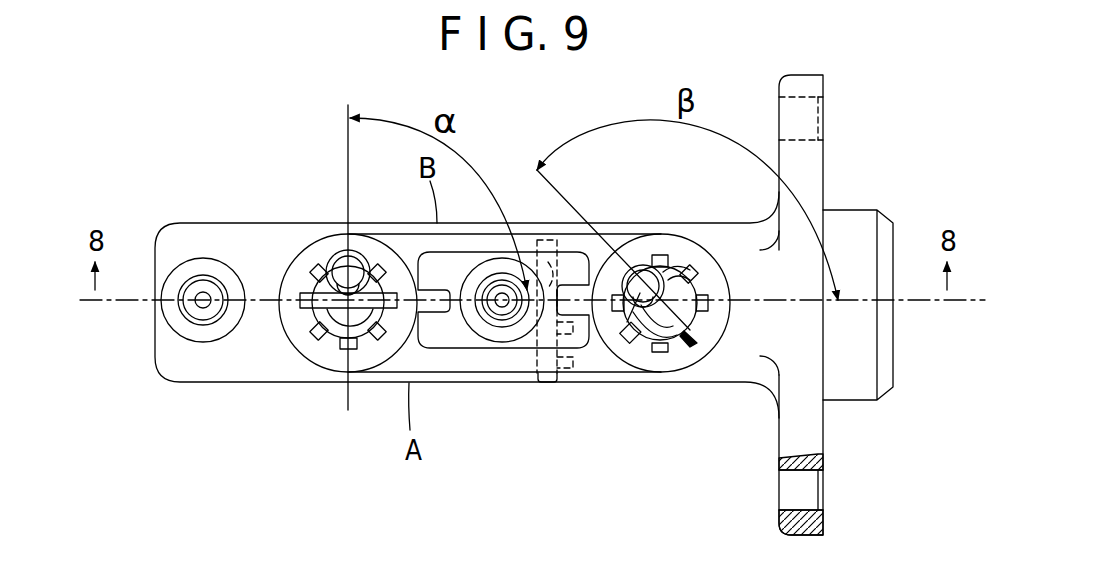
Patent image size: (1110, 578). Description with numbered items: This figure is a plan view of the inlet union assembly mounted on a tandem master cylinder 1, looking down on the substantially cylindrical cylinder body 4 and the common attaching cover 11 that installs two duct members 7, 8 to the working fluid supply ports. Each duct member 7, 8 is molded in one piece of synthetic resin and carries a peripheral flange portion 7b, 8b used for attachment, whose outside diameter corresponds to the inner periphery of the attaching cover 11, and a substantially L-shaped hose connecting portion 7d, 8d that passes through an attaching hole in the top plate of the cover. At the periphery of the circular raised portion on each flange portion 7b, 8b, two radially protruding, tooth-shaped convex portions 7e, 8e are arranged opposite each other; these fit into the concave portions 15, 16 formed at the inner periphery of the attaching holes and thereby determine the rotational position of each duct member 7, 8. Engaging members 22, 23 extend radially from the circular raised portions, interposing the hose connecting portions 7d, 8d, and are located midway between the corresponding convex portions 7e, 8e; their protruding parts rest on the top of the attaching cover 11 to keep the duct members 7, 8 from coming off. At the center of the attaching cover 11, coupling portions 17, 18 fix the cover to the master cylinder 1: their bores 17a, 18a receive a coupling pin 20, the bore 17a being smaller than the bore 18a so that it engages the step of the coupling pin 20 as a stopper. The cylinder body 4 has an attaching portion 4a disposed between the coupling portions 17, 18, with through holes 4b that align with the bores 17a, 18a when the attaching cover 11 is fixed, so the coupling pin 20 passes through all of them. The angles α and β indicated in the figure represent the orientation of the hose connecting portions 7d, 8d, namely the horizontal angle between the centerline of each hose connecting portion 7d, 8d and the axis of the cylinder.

The tandem master cylinder 1 is at (849, 208).
The cylinder body 4 is at (748, 374).
The attaching portion 4a is at (528, 340).
The through holes 4b is at (567, 340).
The duct member 7 is at (338, 250).
The flange portion 7b is at (313, 318).
The hose connecting portion 7d is at (366, 262).
The convex portions 7e is at (356, 346).
The duct member 8 is at (658, 267).
The flange portion 8b is at (642, 336).
The hose connecting portion 8d is at (634, 265).
The convex portions 8e is at (703, 341).
The attaching cover 11 is at (333, 376).
The concave portions 15 is at (322, 312).
The concave portions 16 is at (666, 349).
The coupling portion 17 is at (480, 242).
The bore 17a is at (548, 240).
The coupling portion 18 is at (470, 363).
The bore 18a is at (552, 320).
The coupling pin 20 is at (547, 383).
The engaging member 22 is at (320, 296).
The engaging member 23 is at (698, 262).